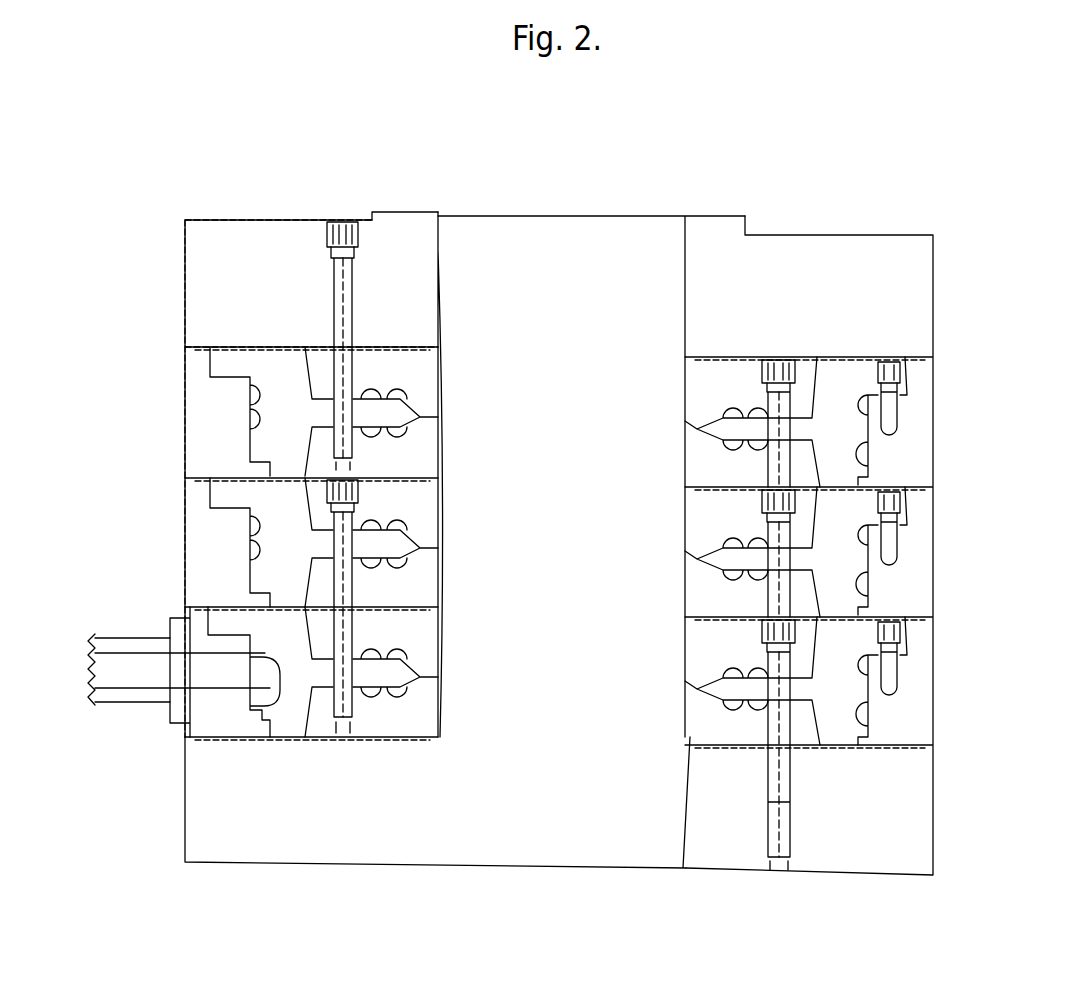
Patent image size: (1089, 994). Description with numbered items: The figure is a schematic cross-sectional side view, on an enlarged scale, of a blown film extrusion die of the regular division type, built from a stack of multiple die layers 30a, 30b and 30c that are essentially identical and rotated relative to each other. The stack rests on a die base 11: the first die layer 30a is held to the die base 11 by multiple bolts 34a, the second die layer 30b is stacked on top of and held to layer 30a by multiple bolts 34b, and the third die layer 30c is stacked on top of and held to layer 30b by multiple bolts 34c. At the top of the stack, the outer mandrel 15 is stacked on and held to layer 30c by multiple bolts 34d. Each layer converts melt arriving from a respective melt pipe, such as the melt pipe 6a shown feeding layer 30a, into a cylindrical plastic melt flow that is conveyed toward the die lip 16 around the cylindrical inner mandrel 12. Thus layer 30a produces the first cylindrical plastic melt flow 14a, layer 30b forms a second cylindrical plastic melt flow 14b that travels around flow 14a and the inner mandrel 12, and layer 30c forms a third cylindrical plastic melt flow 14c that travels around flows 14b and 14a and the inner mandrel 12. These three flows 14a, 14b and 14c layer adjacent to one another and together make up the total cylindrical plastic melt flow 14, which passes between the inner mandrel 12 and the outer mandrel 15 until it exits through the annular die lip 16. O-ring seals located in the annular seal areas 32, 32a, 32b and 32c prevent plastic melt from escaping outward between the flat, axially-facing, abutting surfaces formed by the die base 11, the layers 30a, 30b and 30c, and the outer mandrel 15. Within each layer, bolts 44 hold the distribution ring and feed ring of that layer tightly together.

The die base 11 is at (230, 808).
The inner mandrel 12 is at (548, 270).
The cylindrical plastic melt flow 14 is at (440, 314).
The cylindrical plastic melt flow 14a is at (440, 650).
The second cylindrical plastic melt flow 14b is at (440, 520).
The third cylindrical plastic melt flow 14c is at (440, 388).
The outer mandrel 15 is at (218, 278).
The die lip 16 is at (438, 215).
The die layer 30a is at (215, 710).
The die layer 30b is at (210, 578).
The die layer 30c is at (208, 448).
The annular seal area 32 is at (690, 745).
The annular seal area 32a is at (688, 620).
The annular seal area 32b is at (688, 490).
The annular seal area 32c is at (688, 362).
The bolts 34a is at (780, 720).
The bolts 34b is at (345, 580).
The bolts 34c is at (780, 462).
The bolts 34d is at (345, 295).
The bolts 44 is at (888, 660).
The melt pipe 6a is at (143, 695).